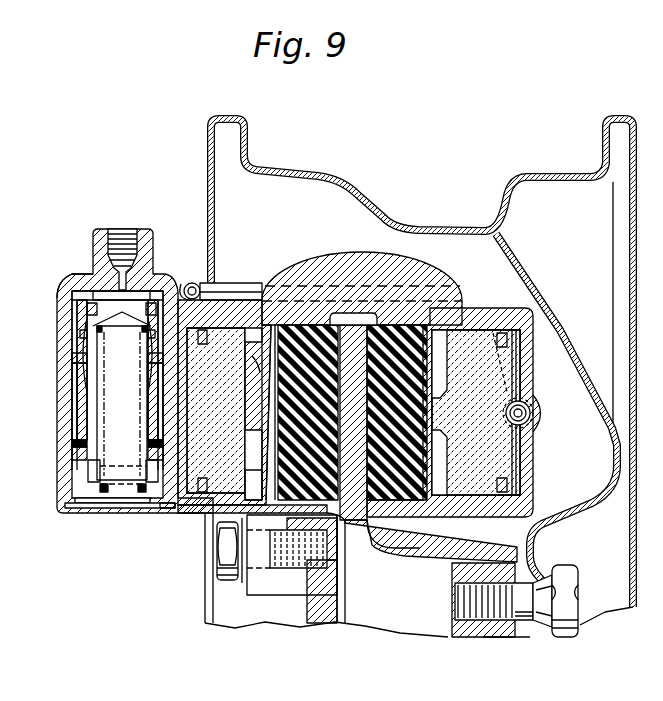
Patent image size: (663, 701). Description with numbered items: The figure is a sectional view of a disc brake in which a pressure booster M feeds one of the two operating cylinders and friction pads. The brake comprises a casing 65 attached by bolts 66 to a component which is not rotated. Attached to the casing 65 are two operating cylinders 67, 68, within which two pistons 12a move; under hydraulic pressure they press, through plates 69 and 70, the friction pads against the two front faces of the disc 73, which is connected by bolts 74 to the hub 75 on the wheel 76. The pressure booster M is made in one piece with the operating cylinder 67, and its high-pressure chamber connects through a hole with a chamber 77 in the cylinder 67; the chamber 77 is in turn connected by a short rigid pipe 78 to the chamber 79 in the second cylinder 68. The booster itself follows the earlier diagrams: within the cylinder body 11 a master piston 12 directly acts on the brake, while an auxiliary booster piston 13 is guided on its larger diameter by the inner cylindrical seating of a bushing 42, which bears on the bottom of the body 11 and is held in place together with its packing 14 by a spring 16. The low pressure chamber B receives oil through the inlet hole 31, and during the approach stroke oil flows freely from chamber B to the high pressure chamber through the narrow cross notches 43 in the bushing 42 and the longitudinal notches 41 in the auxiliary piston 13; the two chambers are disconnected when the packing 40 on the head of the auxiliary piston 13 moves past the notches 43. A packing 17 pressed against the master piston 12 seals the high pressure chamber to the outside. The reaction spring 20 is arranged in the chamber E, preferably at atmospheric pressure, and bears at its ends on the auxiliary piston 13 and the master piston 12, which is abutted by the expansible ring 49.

The master piston 12 is at (62, 472).
The piston 12a is at (487, 322).
The pressure booster M is at (67, 272).
The first or low pressure chamber B is at (92, 298).
The chamber E is at (122, 396).
The inlet hole 31 is at (129, 232).
The packing 40 is at (64, 305).
The cross notches 43 is at (84, 316).
The longitudinal notches 41 is at (84, 345).
The bushing 42 is at (79, 355).
The packing 14 is at (74, 363).
The cylinder body 11 is at (72, 380).
The auxiliary booster piston 13 is at (80, 410).
The spring 16 is at (72, 440).
The packing 17 is at (72, 452).
The coil spring 20 is at (143, 505).
The expansible ring 49 is at (76, 505).
The chamber 77 is at (188, 286).
The short rigid pipe 78 is at (252, 290).
The casing 65 is at (333, 263).
The disc 73 is at (357, 318).
The wheel 76 is at (543, 188).
The chamber 79 is at (532, 330).
The operating cylinder 68 is at (500, 330).
The plate 69 is at (474, 485).
The plate 70 is at (253, 485).
The operating cylinder 67 is at (191, 514).
The bolts 66 is at (222, 557).
The hub 75 is at (455, 632).
The bolts 74 is at (568, 634).